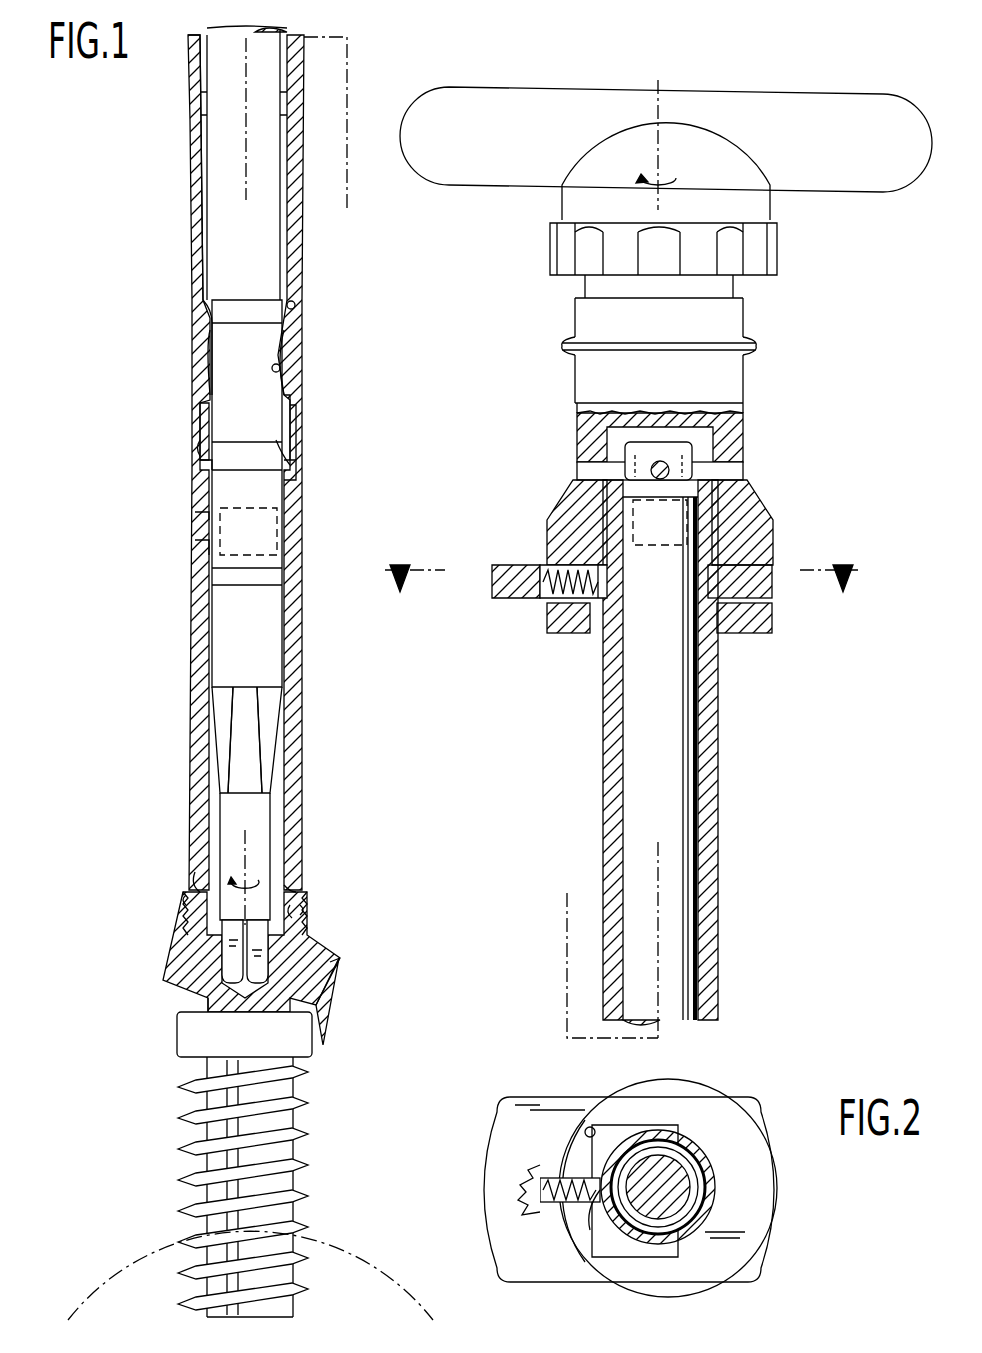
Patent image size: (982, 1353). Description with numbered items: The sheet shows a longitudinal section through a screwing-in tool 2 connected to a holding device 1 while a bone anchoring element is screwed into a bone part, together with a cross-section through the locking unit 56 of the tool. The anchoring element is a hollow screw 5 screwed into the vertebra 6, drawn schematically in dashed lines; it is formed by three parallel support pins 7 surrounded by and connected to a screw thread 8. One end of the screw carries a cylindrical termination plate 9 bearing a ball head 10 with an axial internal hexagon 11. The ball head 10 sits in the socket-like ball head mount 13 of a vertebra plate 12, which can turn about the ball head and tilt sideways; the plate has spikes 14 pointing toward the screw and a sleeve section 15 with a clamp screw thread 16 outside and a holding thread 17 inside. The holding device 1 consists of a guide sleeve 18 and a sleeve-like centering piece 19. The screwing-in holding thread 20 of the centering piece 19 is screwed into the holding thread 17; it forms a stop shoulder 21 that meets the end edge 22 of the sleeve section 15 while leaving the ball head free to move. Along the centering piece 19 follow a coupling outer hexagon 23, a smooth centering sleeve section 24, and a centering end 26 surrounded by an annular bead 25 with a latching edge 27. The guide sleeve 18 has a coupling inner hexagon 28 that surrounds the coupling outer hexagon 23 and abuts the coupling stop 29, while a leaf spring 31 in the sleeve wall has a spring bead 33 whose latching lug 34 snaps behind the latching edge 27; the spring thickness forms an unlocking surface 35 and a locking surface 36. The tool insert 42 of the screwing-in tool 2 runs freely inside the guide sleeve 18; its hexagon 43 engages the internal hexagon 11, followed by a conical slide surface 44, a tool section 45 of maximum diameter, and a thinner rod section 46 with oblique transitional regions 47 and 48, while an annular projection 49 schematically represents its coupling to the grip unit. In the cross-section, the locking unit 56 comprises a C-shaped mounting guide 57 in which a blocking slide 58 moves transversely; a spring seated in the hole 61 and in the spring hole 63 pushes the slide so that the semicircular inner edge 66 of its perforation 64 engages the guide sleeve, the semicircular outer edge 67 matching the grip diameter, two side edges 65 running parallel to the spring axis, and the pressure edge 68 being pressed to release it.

In FIG. 1, the holding device 1 is at (173, 396).
In FIG. 1, the screwing-in tool 2 is at (415, 560).
In FIG. 2, the screwing-in tool 2 is at (779, 494).
In FIG. 1, the hollow screw 5 is at (246, 1164).
In FIG. 1, the vertebra 6 is at (150, 1245).
In FIG. 1, the support pins 7 is at (290, 1150).
In FIG. 1, the screw thread 8 is at (246, 1187).
In FIG. 1, the termination plate 9 is at (192, 1030).
In FIG. 1, the ball head 10 is at (341, 968).
In FIG. 1, the internal hexagon 11 is at (308, 902).
In FIG. 1, the vertebra plate 12 is at (157, 966).
In FIG. 1, the ball head mount 13 is at (206, 997).
In FIG. 1, the spikes 14 is at (331, 1025).
In FIG. 1, the sleeve section 15 is at (181, 906).
In FIG. 1, the clamp screw thread 16 is at (296, 913).
In FIG. 1, the holding thread 17 is at (292, 890).
In FIG. 1, the guide sleeve 18 is at (192, 75).
In FIG. 2, the guide sleeve 18 is at (716, 834).
In FIG. 1, the centering piece 19 is at (303, 726).
In FIG. 1, the screwing-in holding thread 20 is at (190, 896).
In FIG. 1, the stop shoulder 21 is at (302, 910).
In FIG. 1, the end edge 22 is at (200, 870).
In FIG. 1, the coupling outer hexagon 23 is at (200, 520).
In FIG. 1, the centering sleeve section 24 is at (291, 480).
In FIG. 1, the annular bead 25 is at (294, 418).
In FIG. 1, the centering end 26 is at (296, 392).
In FIG. 1, the latching edge 27 is at (205, 430).
In FIG. 1, the coupling inner hexagon 28 is at (209, 548).
In FIG. 1, the coupling stop 29 is at (297, 552).
In FIG. 1, the leaf spring 31 is at (303, 266).
In FIG. 1, the spring bead 33 is at (286, 460).
In FIG. 1, the latching lug 34 is at (200, 415).
In FIG. 1, the unlocking surface 35 is at (285, 360).
In FIG. 1, the locking surface 36 is at (292, 305).
In FIG. 2, the tool insert 42 is at (670, 712).
In FIG. 1, the hexagon 43 is at (236, 971).
In FIG. 1, the slide surface 44 is at (270, 770).
In FIG. 1, the tool section 45 is at (215, 632).
In FIG. 1, the rod section 46 is at (215, 370).
In FIG. 1, the transitional region 47 is at (210, 312).
In FIG. 1, the transitional region 48 is at (211, 461).
In FIG. 2, the annular projection 49 is at (700, 456).
In FIG. 2, the locking unit 56 is at (635, 1179).
In FIG. 2, the mounting guide 57 is at (660, 1130).
In FIG. 2, the blocking slide 58 is at (545, 1097).
In FIG. 2, the hole 61 is at (600, 1202).
In FIG. 2, the spring hole 63 is at (554, 1215).
In FIG. 2, the perforation 64 is at (590, 1128).
In FIG. 2, the side edges 65 is at (702, 1100).
In FIG. 2, the inner edge 66 is at (686, 1146).
In FIG. 2, the outer edge 67 is at (773, 1186).
In FIG. 2, the pressure edge 68 is at (487, 1196).